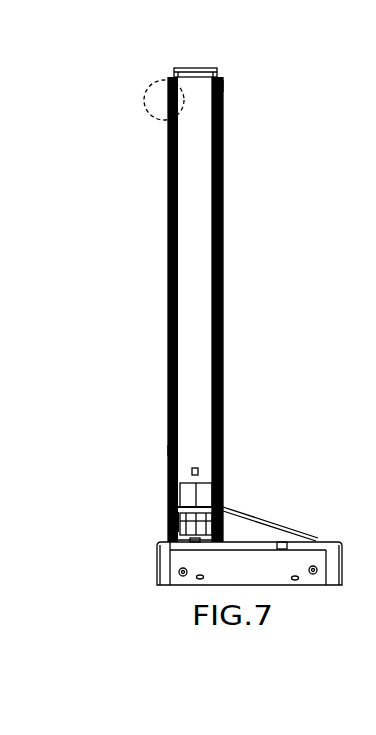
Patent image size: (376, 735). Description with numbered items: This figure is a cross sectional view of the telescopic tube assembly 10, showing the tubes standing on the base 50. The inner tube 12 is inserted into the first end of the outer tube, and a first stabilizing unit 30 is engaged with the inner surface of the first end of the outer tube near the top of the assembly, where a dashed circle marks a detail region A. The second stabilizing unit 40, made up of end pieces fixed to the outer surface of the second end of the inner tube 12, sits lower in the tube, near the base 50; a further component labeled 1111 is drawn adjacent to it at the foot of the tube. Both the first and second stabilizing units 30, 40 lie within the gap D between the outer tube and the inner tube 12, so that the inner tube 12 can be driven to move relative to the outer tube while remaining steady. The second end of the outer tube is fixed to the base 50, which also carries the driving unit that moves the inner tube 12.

The telescopic tube assembly 10 is at (166, 72).
The inner tube 12 is at (210, 68).
The first stabilizing unit 30 is at (223, 98).
The gap D is at (223, 86).
The detail region A is at (147, 88).
The second stabilizing unit 40 is at (168, 486).
The lower frame 1111 is at (172, 529).
The base 50 is at (157, 572).